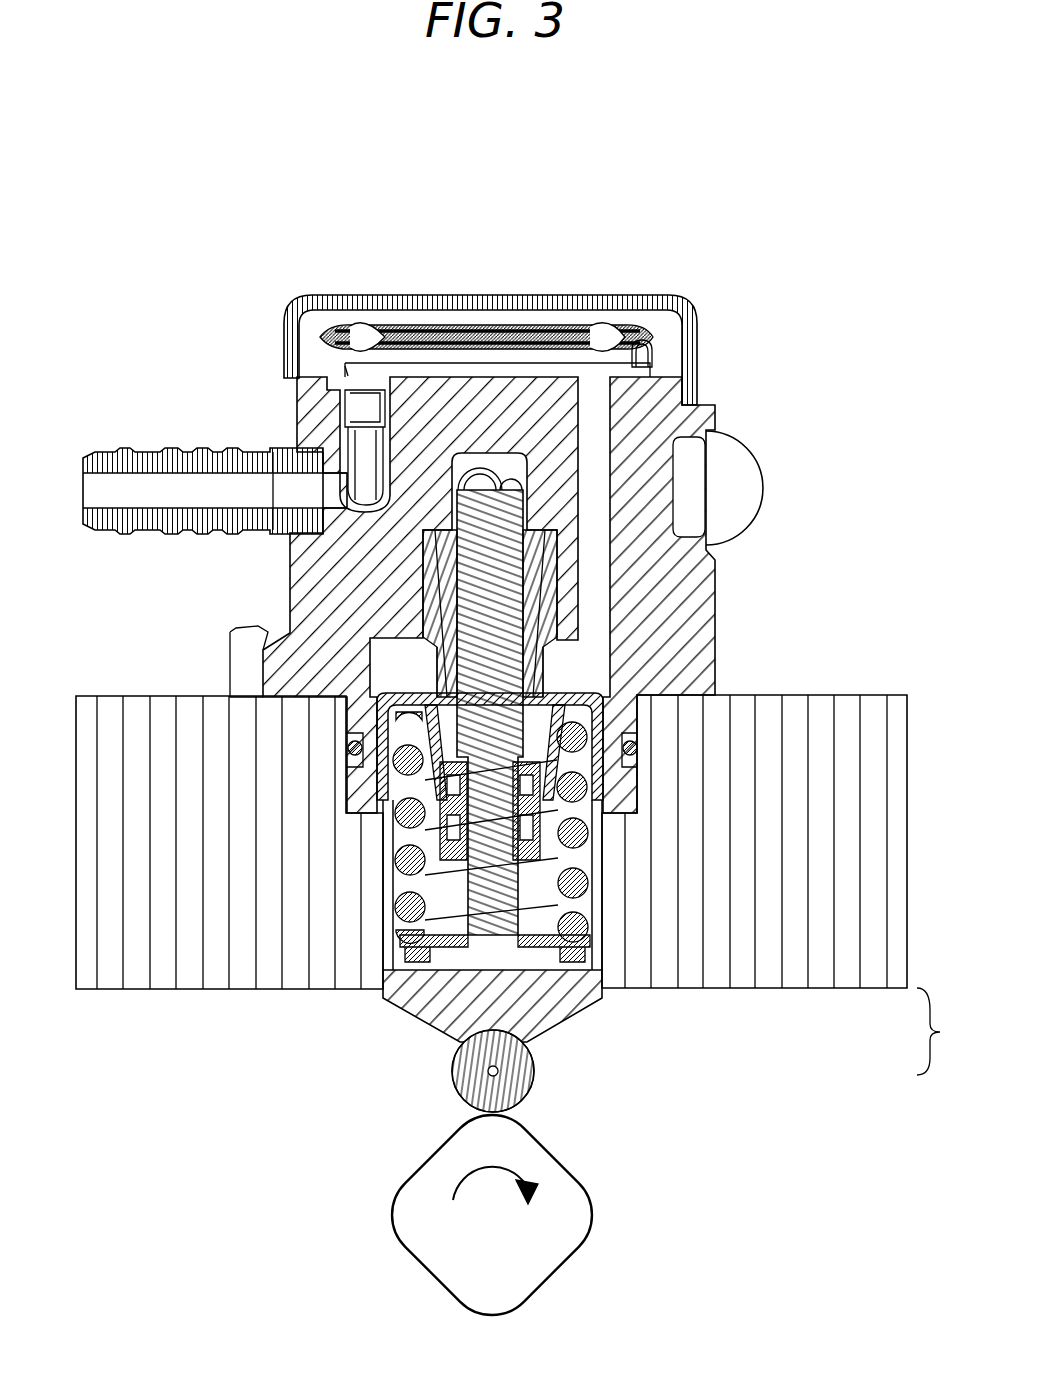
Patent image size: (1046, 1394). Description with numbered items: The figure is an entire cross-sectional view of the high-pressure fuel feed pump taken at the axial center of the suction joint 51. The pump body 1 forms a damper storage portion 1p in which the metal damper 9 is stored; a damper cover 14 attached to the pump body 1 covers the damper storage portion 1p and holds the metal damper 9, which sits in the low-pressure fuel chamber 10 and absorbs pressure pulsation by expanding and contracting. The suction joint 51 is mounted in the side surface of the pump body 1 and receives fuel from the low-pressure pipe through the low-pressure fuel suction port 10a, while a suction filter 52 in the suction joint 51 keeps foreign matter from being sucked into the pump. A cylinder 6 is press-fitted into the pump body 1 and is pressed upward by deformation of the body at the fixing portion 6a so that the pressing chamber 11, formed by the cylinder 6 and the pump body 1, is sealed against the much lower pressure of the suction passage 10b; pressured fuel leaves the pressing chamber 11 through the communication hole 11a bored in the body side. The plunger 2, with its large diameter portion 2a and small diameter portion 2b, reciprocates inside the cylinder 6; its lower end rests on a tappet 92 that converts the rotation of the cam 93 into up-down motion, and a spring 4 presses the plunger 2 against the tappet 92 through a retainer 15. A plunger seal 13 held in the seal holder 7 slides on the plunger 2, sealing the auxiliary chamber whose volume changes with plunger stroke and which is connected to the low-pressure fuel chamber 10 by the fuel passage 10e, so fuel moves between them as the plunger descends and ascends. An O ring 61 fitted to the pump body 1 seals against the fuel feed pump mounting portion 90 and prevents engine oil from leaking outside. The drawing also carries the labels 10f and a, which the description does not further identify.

The pump body 1 is at (648, 396).
The damper storage portion 1p is at (350, 365).
The plunger 2 is at (939, 1031).
The large diameter portion 2a is at (552, 752).
The small diameter portion 2b is at (552, 775).
The spring 4 is at (455, 755).
The cylinder 6 is at (437, 550).
The fixing portion 6a is at (437, 647).
The seal holder 7 is at (408, 830).
The metal damper 9 is at (382, 323).
The low-pressure fuel chamber 10 is at (610, 320).
The low-pressure fuel suction port 10a is at (120, 497).
The suction passage 10b is at (315, 335).
The fuel passage 10e is at (598, 598).
The passage 10f is at (413, 477).
The pressing chamber 11 is at (503, 470).
The communication hole 11a is at (473, 468).
The plunger seal 13 is at (553, 830).
The damper cover 14 is at (693, 335).
The retainer 15 is at (572, 958).
The suction joint 51 is at (283, 452).
The suction filter 52 is at (337, 443).
The O ring 61 is at (350, 748).
The fuel feed pump mounting portion 90 is at (287, 815).
The tappet 92 is at (527, 1043).
The cam 93 is at (560, 1210).
The gap a is at (316, 1080).